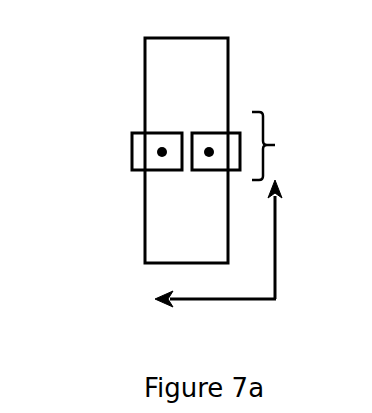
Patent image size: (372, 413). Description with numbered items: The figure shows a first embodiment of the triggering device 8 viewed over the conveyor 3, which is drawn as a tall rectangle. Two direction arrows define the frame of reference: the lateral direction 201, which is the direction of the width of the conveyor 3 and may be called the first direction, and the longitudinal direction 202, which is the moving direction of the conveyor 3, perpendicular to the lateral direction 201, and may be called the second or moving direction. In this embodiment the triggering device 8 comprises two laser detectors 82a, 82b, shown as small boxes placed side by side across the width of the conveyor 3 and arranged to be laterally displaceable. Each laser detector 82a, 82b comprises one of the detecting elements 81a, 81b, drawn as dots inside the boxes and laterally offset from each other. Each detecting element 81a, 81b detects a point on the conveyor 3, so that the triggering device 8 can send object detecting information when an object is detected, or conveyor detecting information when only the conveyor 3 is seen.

The conveyor 3 is at (168, 110).
The triggering device 8 is at (271, 146).
The detecting element 81a is at (162, 152).
The detecting element 81b is at (209, 152).
The laser detector 82a is at (132, 158).
The laser detector 82b is at (215, 171).
The lateral direction 201 is at (218, 300).
The longitudinal direction 202 is at (275, 263).